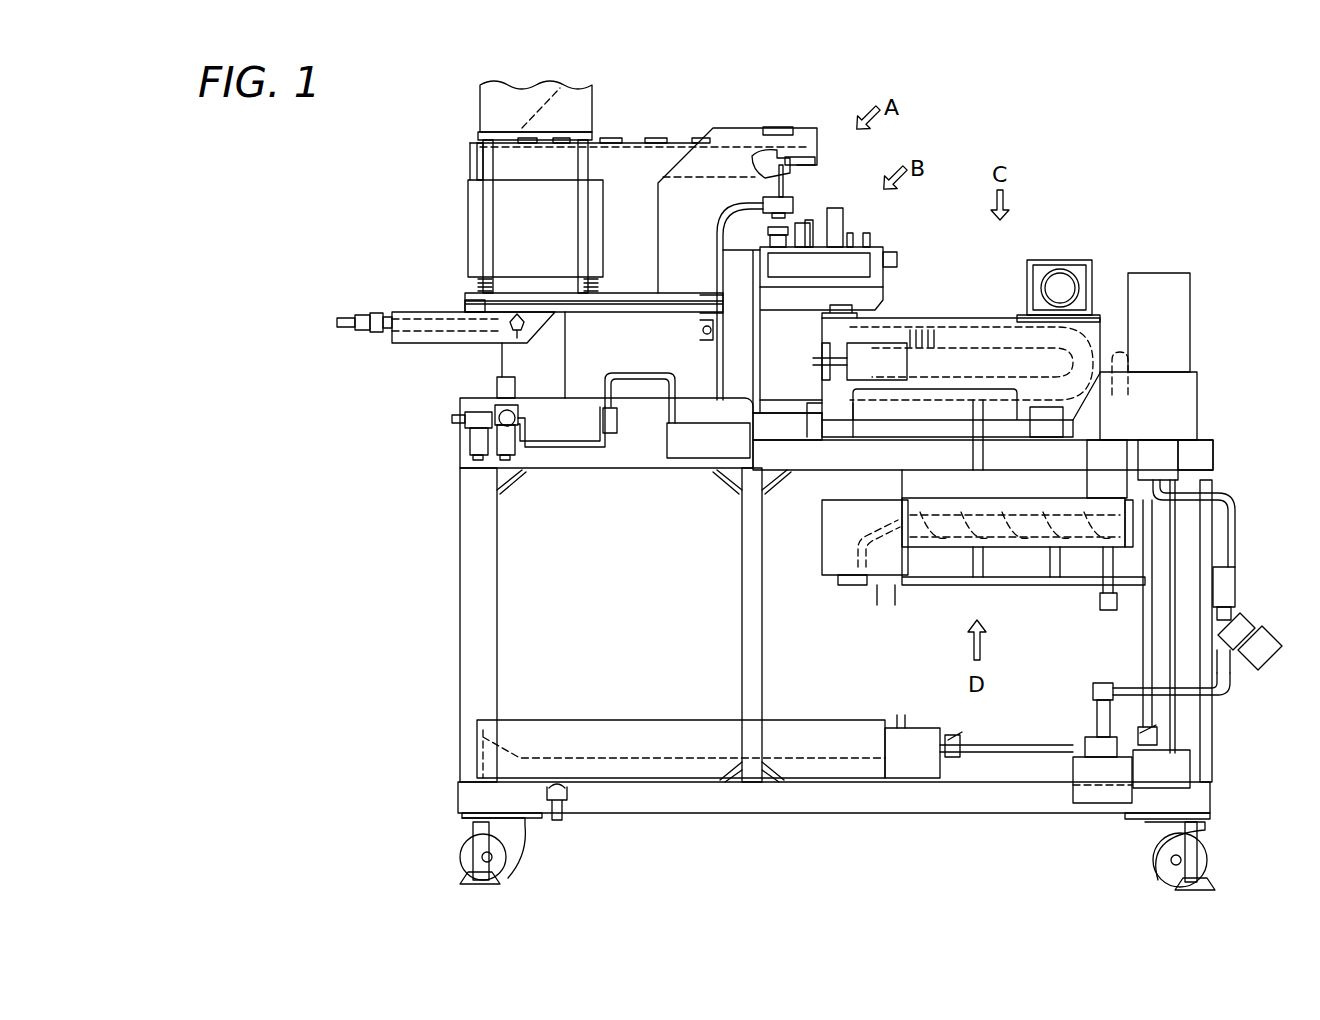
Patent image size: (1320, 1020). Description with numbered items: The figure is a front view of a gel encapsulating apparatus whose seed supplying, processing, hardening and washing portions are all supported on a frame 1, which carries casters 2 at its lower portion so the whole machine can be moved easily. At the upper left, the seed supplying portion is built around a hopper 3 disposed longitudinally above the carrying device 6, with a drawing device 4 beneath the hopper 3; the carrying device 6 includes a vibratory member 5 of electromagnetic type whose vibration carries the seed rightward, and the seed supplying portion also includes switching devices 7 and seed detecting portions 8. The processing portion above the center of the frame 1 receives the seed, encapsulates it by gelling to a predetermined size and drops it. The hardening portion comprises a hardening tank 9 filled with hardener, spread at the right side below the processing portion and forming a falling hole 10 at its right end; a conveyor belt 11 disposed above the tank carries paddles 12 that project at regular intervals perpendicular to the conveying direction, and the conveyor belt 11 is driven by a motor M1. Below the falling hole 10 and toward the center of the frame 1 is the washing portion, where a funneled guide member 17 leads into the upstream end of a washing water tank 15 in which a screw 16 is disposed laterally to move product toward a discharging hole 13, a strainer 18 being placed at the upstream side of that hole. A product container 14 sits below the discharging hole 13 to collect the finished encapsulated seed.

The frame 1 is at (470, 596).
The casters 2 is at (512, 852).
The hopper 3 is at (495, 107).
The drawing device 4 is at (480, 163).
The vibratory member 5 is at (475, 227).
The carrying device 6 is at (680, 128).
The switching devices 7 is at (822, 172).
The seed detecting portions 8 is at (797, 204).
The hardening tank 9 is at (970, 318).
The falling hole 10 is at (1125, 345).
The conveyor belt 11 is at (1105, 330).
The paddles 12 is at (935, 330).
The discharging hole 13 is at (850, 592).
The product container 14 is at (635, 720).
The washing water tank 15 is at (988, 500).
The screw 16 is at (1027, 540).
The funneled guide member 17 is at (1160, 490).
The strainer 18 is at (873, 545).
The motor M1 is at (1060, 290).